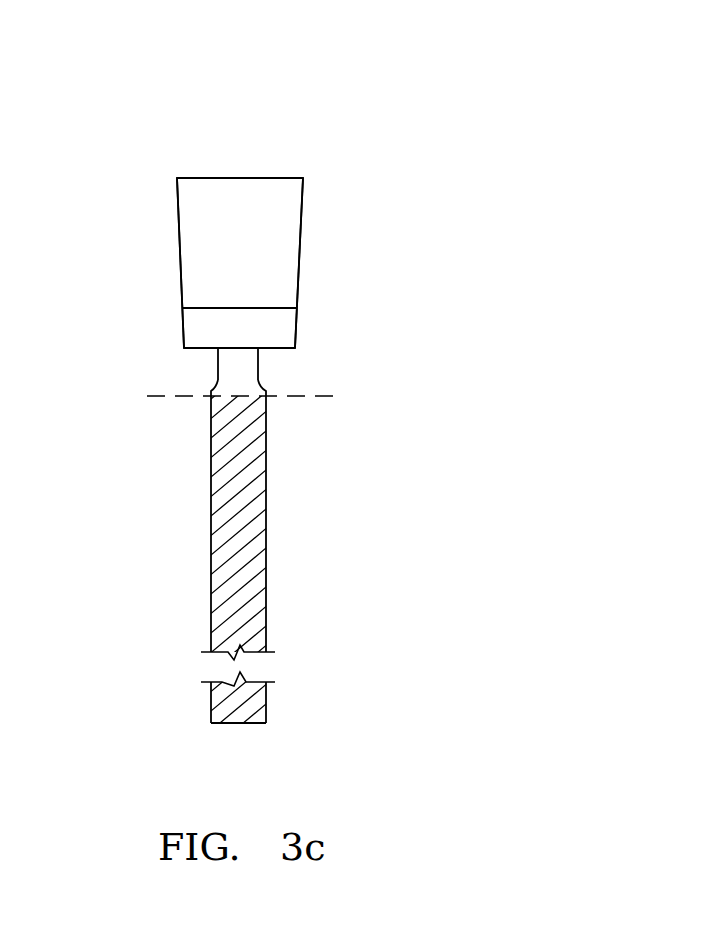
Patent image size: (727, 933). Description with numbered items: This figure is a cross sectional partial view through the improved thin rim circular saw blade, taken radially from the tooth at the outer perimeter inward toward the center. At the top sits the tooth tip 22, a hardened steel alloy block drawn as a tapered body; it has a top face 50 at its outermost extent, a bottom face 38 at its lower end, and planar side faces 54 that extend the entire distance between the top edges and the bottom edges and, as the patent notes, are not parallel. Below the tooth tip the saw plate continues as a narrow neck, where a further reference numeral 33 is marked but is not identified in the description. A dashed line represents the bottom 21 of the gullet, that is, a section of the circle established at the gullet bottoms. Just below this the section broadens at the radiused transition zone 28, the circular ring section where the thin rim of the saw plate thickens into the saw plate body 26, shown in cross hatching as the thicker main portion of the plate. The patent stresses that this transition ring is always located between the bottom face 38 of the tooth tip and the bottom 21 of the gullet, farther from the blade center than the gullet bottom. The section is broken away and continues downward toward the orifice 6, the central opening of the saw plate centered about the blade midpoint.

The tooth tip 22 is at (268, 243).
The top face 50 is at (230, 178).
The planar side faces 54 is at (180, 237).
The bottom face 38 is at (195, 351).
The neck 33 is at (258, 363).
The radiused transition zone 28 is at (225, 386).
The bottom of the gullet 21 is at (295, 397).
The saw plate body 26 is at (266, 537).
The orifice 6 is at (247, 729).